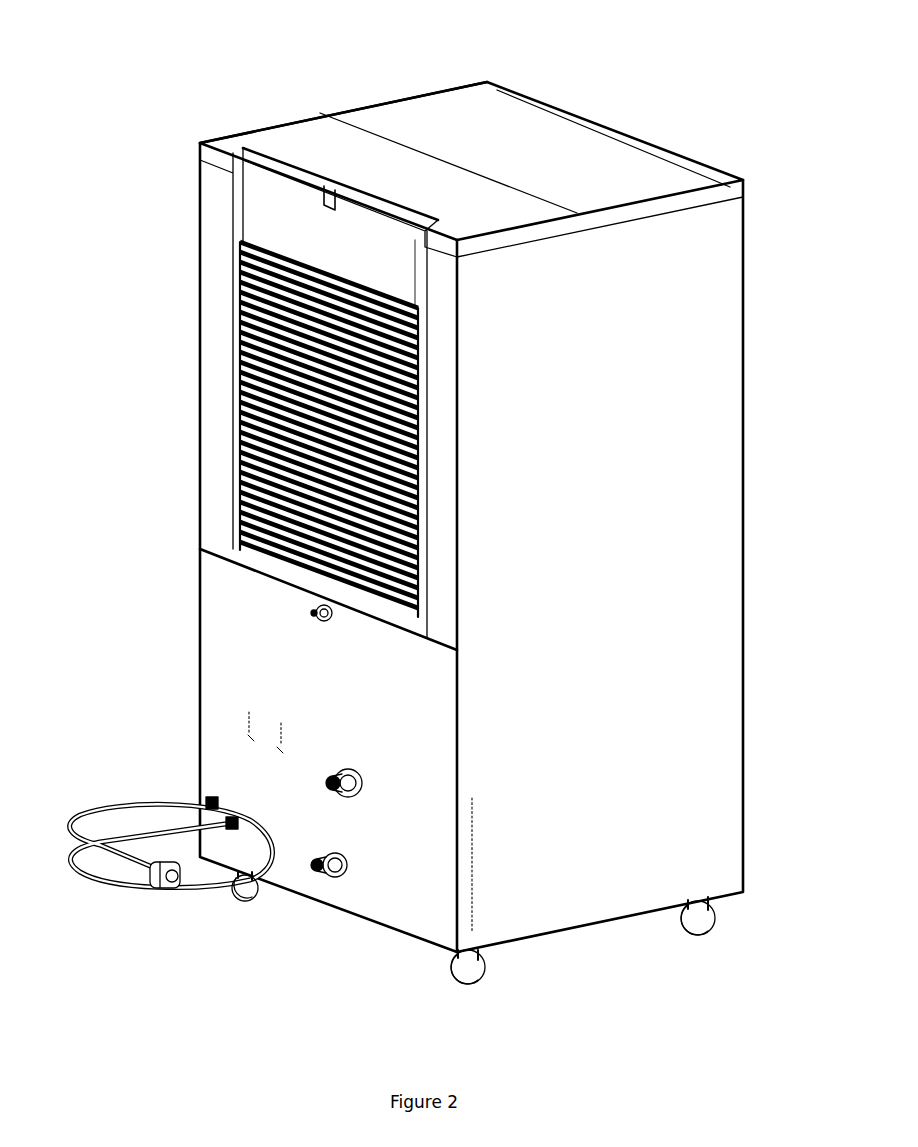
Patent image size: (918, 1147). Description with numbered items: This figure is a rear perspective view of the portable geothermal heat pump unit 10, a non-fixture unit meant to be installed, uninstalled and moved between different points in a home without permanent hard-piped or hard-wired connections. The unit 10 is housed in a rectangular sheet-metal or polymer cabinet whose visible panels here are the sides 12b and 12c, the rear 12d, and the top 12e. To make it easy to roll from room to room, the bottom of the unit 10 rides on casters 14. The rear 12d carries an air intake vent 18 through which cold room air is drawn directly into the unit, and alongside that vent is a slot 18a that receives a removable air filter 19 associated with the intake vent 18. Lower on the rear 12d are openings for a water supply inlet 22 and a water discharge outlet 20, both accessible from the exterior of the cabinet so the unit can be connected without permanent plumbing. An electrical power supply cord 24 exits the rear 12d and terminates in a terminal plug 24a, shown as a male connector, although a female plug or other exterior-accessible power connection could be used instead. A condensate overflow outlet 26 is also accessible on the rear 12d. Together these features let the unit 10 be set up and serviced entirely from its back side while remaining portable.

The portable geothermal heat pump unit 10 is at (198, 141).
The side 12b is at (652, 462).
The side 12c is at (345, 108).
The rear 12d is at (227, 609).
The top 12e is at (456, 102).
The casters 14 is at (481, 978).
The air intake vent 18 is at (236, 400).
The slot 18a is at (249, 147).
The removable air filter 19 is at (328, 196).
The water discharge outlet 20 is at (319, 882).
The water supply inlet 22 is at (341, 800).
The electrical power supply cord 24 is at (127, 889).
The terminal plug 24a is at (180, 890).
The condensate overflow outlet 26 is at (314, 612).